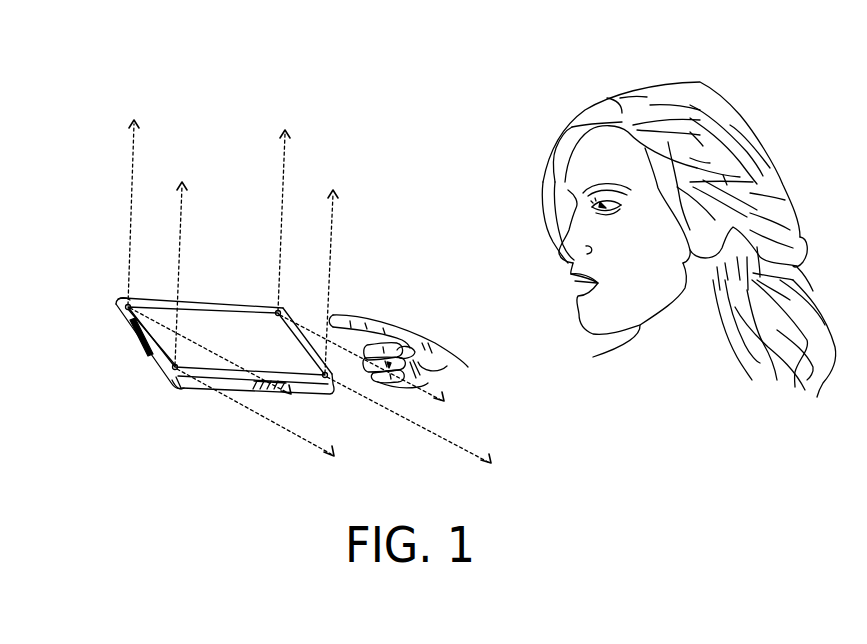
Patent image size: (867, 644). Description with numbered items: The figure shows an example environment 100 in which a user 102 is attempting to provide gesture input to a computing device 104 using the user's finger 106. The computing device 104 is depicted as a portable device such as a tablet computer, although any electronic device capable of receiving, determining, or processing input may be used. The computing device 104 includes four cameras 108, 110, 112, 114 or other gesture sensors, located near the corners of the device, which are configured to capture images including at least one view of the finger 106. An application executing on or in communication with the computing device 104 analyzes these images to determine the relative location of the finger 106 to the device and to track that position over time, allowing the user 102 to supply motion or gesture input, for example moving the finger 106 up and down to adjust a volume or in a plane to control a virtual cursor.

The environment 100 is at (75, 90).
The user 102 is at (530, 150).
The computing device 104 is at (163, 303).
The finger 106 is at (383, 317).
The camera 108 is at (280, 305).
The camera 110 is at (123, 315).
The camera 112 is at (167, 383).
The camera 114 is at (333, 393).